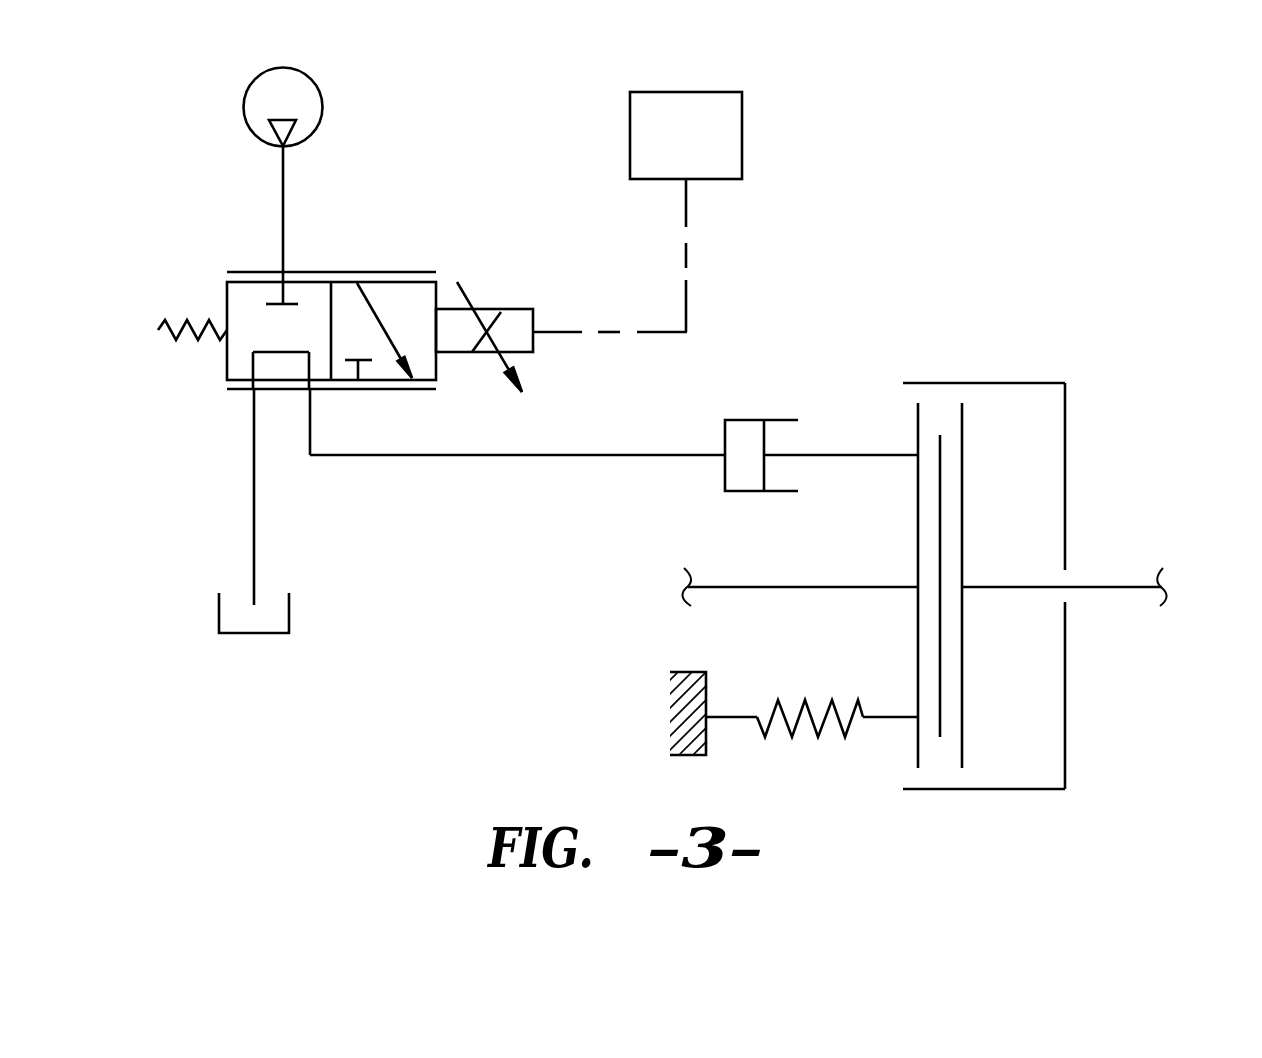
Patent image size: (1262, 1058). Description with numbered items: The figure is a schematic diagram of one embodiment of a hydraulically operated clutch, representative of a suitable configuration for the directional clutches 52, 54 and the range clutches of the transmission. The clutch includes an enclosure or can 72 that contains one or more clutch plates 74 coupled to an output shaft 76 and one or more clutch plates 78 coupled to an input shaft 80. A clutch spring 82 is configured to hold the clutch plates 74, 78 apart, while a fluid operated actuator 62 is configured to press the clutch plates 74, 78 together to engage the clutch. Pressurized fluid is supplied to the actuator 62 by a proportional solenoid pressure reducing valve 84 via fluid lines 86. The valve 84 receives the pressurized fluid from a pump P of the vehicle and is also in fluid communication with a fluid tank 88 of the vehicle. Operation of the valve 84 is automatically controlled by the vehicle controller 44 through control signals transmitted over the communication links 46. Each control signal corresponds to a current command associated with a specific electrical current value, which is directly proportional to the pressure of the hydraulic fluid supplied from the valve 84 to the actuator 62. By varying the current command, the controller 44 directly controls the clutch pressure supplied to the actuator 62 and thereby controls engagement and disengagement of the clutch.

The pump P is at (320, 98).
The vehicle controller 44 is at (668, 148).
The communication links 46 is at (687, 308).
The directional clutch 52 is at (1112, 166).
The directional clutch 54 is at (1135, 140).
The fluid operated actuator 62 is at (764, 438).
The can 72 is at (1007, 382).
The clutch plates 74 is at (962, 497).
The output shaft 76 is at (1097, 587).
The clutch plates 78 is at (918, 673).
The input shaft 80 is at (728, 587).
The clutch spring 82 is at (810, 727).
The proportional solenoid pressure reducing valve 84 is at (223, 298).
The fluid lines 86 is at (278, 227).
The fluid tank 88 is at (219, 610).